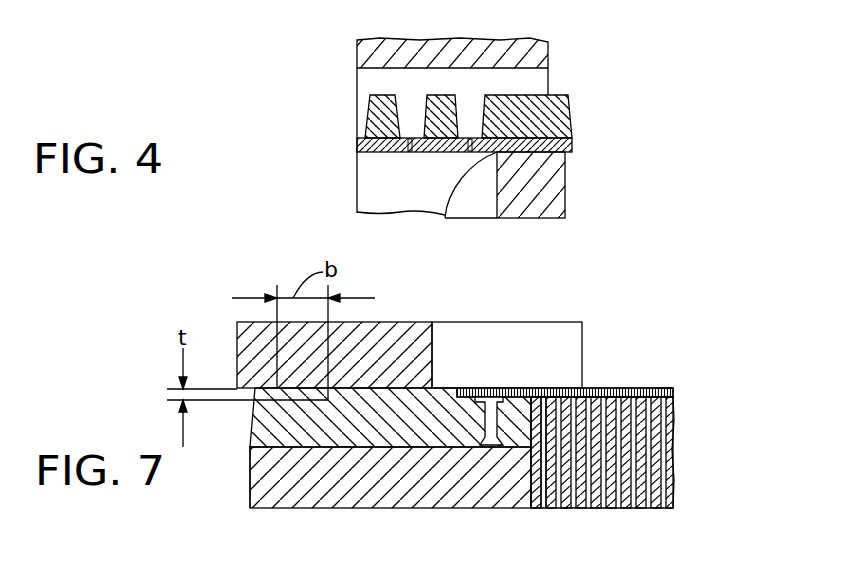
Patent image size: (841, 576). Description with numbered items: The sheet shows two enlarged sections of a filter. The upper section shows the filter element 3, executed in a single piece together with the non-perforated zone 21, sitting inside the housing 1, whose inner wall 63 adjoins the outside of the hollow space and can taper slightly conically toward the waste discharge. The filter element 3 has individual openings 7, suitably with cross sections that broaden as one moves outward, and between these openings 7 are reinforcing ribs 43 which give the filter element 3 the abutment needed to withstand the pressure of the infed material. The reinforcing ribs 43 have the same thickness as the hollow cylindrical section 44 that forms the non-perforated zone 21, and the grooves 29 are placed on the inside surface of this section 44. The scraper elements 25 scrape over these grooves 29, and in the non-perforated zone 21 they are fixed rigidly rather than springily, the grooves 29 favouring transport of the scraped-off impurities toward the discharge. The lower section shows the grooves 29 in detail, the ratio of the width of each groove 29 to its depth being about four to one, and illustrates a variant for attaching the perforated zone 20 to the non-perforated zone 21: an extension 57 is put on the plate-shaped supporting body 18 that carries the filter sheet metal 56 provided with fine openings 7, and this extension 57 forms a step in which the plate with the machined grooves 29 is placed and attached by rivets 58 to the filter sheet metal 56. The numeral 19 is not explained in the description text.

In FIG. 4, the housing 1 is at (520, 50).
In FIG. 4, the inner wall 63 is at (360, 72).
In FIG. 4, the filter element 3 is at (362, 110).
In FIG. 4, the reinforcing ribs 43 is at (412, 168).
In FIG. 4, the hollow cylindrical section 44 is at (563, 93).
In FIG. 4, the grooves 29 is at (570, 146).
In FIG. 7, the grooves 29 is at (328, 401).
In FIG. 4, the openings 7 is at (450, 152).
In FIG. 7, the openings 7 is at (593, 389).
In FIG. 4, the scraper elements 25 is at (547, 187).
In FIG. 7, the scraper elements 25 is at (405, 322).
In FIG. 7, the rivets 58 is at (491, 388).
In FIG. 7, the filter sheet metal 56 is at (657, 389).
In FIG. 7, the plate-shaped supporting body 18 is at (690, 434).
In FIG. 7, the extension 57 is at (288, 508).
In FIG. 7, the non-perforated zone 21 is at (362, 522).
In FIG. 7, the perforated zone 20 is at (545, 522).
In FIG. 7, the laminated sheets 19 is at (598, 508).